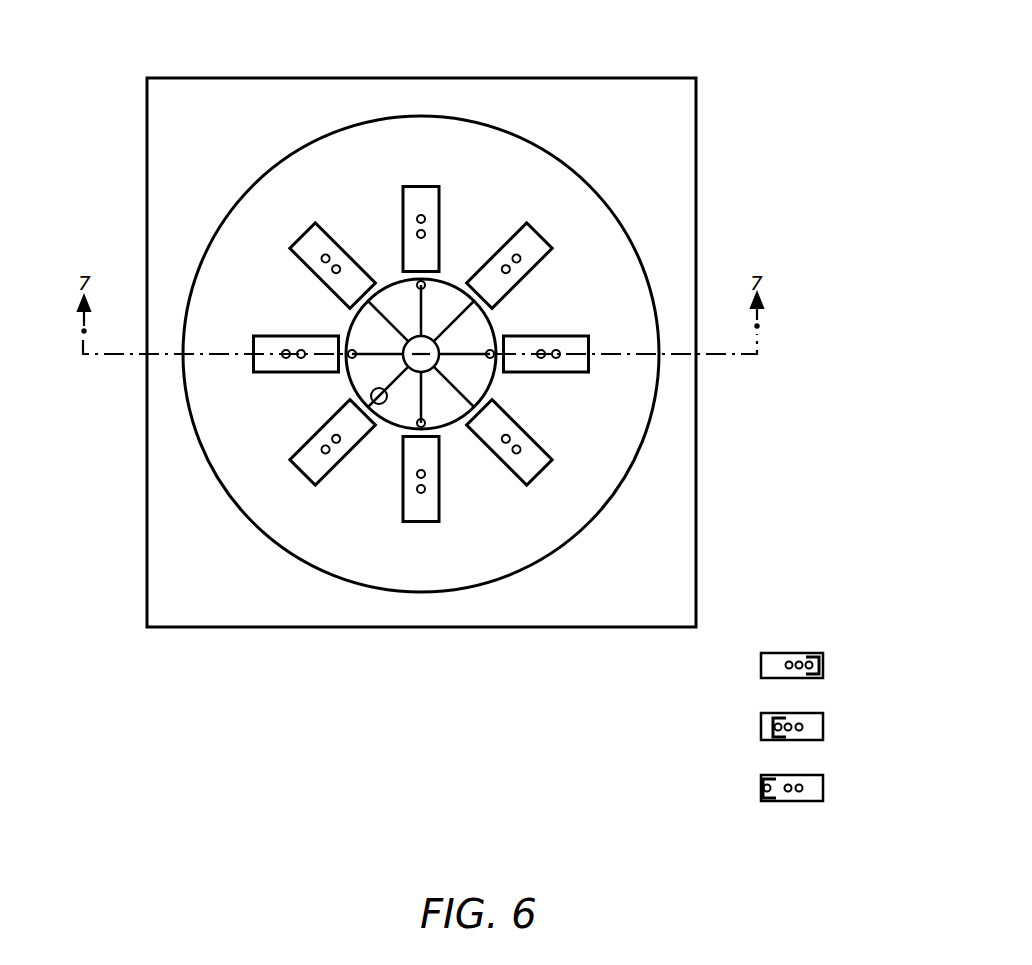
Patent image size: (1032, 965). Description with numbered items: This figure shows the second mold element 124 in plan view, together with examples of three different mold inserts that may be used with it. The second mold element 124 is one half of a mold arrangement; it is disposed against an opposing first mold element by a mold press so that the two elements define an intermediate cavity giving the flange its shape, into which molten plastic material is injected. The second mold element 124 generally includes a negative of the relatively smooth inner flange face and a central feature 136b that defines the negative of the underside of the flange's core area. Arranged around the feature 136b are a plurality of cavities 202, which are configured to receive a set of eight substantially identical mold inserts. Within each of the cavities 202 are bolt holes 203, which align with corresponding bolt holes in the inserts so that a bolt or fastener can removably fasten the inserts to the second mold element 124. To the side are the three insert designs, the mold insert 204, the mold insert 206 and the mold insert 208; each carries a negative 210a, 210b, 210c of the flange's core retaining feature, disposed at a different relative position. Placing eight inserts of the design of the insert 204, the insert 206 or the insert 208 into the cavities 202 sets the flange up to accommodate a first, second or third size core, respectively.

The second mold element 124 is at (147, 485).
The feature 136b is at (437, 303).
The cavities 202 is at (342, 242).
The bolt holes 203 is at (320, 258).
The mold insert 204 is at (823, 665).
The mold insert 206 is at (823, 727).
The mold insert 208 is at (823, 790).
The negative of the core retaining feature 210a is at (812, 653).
The negative of the core retaining feature 210b is at (780, 718).
The negative of the core retaining feature 210c is at (768, 802).